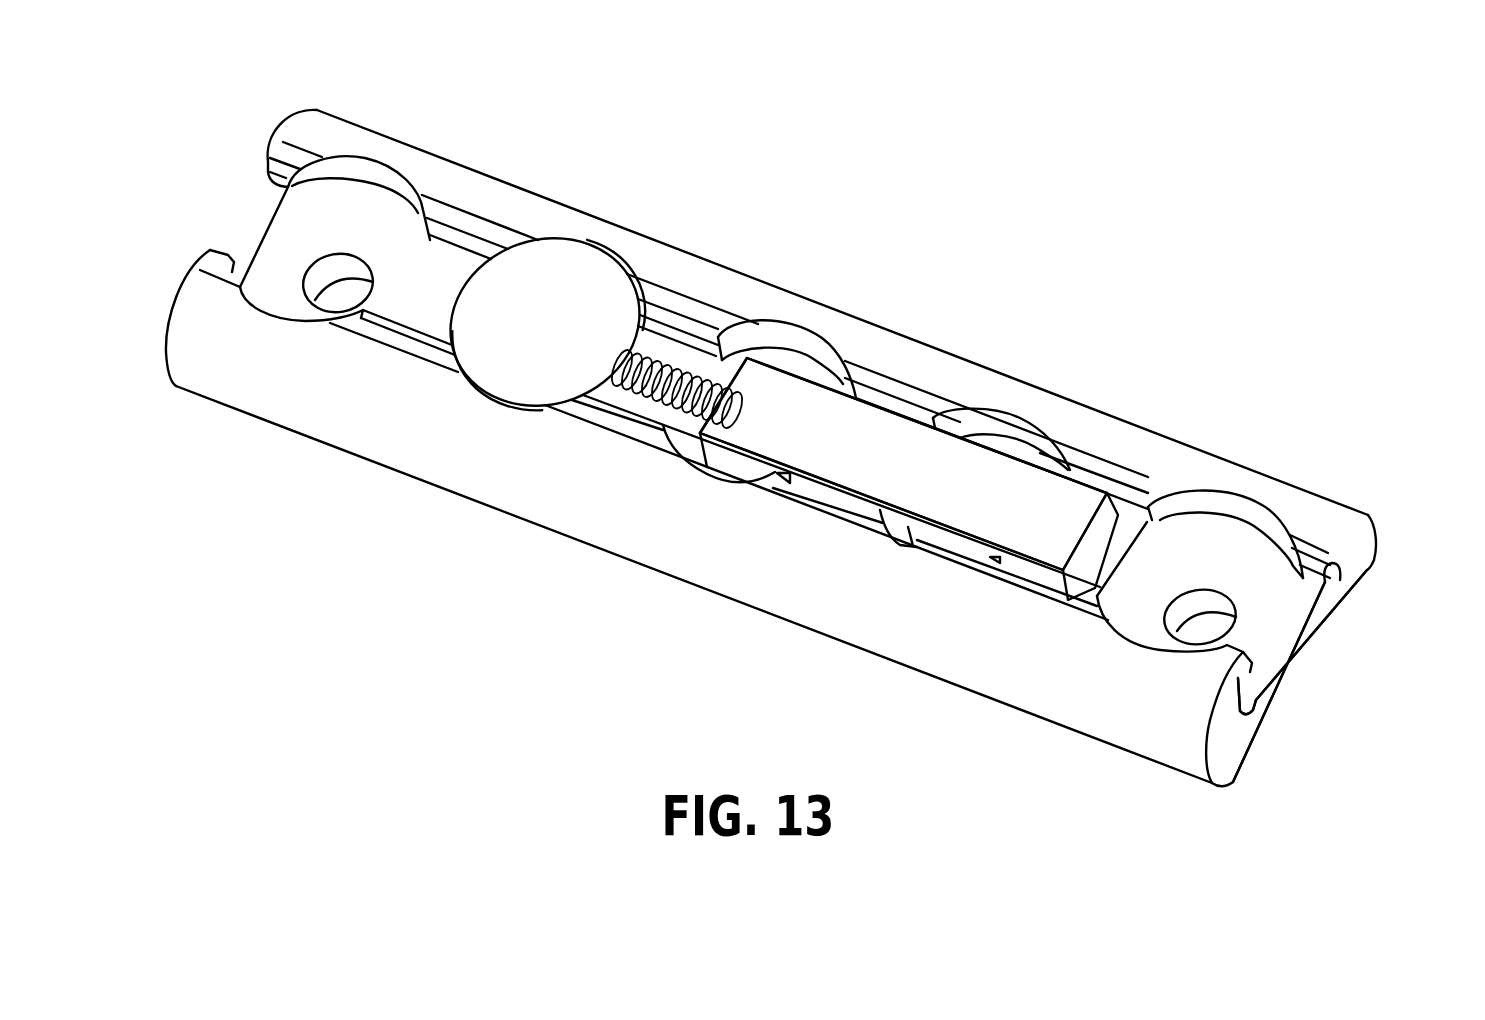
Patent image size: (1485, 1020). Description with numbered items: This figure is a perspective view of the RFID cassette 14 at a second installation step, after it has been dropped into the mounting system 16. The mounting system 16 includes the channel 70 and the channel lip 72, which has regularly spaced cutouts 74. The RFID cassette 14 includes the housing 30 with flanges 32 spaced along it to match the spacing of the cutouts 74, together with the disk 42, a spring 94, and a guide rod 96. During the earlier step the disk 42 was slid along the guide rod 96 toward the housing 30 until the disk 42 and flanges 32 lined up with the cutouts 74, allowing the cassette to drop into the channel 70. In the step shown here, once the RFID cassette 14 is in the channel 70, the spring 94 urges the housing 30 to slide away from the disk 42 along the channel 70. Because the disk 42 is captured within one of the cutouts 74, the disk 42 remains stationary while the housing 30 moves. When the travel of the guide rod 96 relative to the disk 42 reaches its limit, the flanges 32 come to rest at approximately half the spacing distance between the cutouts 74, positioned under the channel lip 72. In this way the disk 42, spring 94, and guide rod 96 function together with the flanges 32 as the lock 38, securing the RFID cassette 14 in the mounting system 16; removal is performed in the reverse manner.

The RFID cassette 14 is at (955, 466).
The mounting system 16 is at (999, 737).
The housing 30 is at (880, 442).
The flanges 32 is at (897, 528).
The lock 38 is at (348, 477).
The disk 42 is at (577, 277).
The channel 70 is at (1316, 679).
The channel lip 72 is at (1335, 566).
The cutouts 74 is at (1219, 525).
The spring 94 is at (752, 328).
The guide rod 96 is at (667, 348).